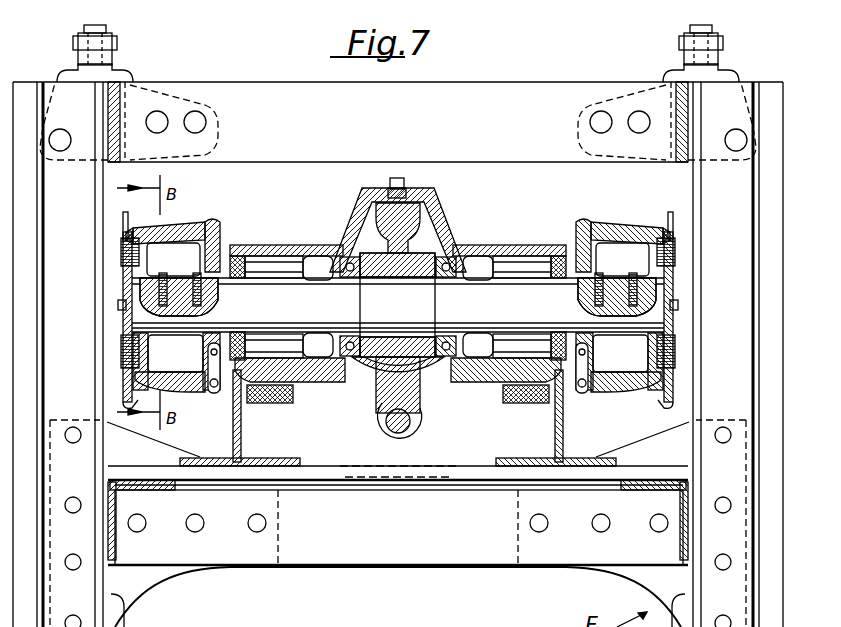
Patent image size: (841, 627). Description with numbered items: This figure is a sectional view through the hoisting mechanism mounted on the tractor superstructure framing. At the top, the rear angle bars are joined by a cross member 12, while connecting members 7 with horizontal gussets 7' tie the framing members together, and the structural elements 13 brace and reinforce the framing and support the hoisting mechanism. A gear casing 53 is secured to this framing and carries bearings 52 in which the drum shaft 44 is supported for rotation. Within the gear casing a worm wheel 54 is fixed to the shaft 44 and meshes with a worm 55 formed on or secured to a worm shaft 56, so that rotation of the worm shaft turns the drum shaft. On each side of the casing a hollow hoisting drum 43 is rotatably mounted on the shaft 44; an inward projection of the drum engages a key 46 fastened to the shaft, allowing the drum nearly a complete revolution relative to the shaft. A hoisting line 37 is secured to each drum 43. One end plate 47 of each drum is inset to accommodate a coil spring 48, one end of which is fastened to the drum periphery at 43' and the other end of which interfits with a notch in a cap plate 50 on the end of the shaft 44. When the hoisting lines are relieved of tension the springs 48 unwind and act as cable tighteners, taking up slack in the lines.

The cross member 12 is at (500, 98).
The hoisting drum 43 is at (398, 250).
The spring fastening point 43' is at (402, 214).
The key 46 is at (178, 282).
The end plate 47 is at (150, 362).
The coil spring 48 is at (121, 352).
The cap plate 50 is at (121, 303).
The bearing 52 is at (280, 243).
The gear casing 53 is at (462, 242).
The worm wheel 54 is at (422, 222).
The drum shaft 44 is at (397, 333).
The worm 55 is at (414, 430).
The worm shaft 56 is at (381, 412).
The hoisting line 37 is at (214, 395).
The connecting member 7 is at (398, 522).
The horizontal gusset 7' is at (428, 522).
The structural element 13 is at (480, 470).